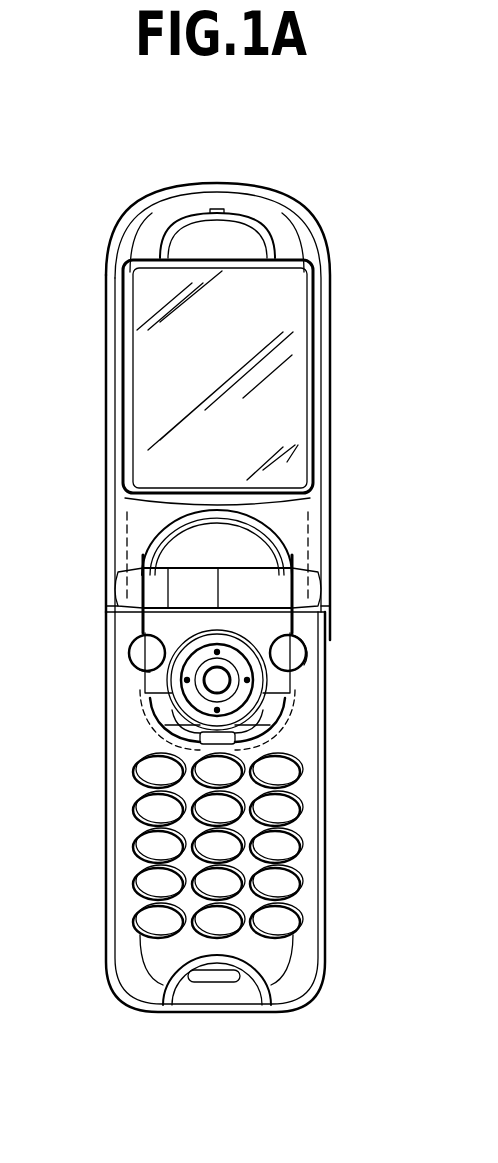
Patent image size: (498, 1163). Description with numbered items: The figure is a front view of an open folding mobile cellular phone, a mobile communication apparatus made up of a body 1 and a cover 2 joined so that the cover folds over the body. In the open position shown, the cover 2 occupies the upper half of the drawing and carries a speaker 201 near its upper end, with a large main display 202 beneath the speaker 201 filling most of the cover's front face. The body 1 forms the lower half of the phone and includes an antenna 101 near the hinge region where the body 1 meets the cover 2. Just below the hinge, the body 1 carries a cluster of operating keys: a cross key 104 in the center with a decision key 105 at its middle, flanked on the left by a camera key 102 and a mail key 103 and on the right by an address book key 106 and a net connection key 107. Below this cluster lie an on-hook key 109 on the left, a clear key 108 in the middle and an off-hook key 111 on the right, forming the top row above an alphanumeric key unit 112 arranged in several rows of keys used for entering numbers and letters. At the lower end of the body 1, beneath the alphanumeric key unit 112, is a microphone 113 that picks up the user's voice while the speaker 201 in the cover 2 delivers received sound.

The body 1 is at (290, 987).
The cover 2 is at (295, 228).
The antenna 101 is at (325, 562).
The camera key 102 is at (148, 658).
The mail key 103 is at (163, 707).
The cross key 104 is at (217, 650).
The decision key 105 is at (218, 680).
The address book key 106 is at (290, 660).
The net connection key 107 is at (270, 708).
The clear key 108 is at (213, 778).
The on-hook key 109 is at (158, 770).
The off-hook key 111 is at (290, 770).
The alphanumeric key unit 112 is at (340, 812).
The microphone 113 is at (217, 955).
The speaker 201 is at (220, 212).
The main display 202 is at (272, 358).